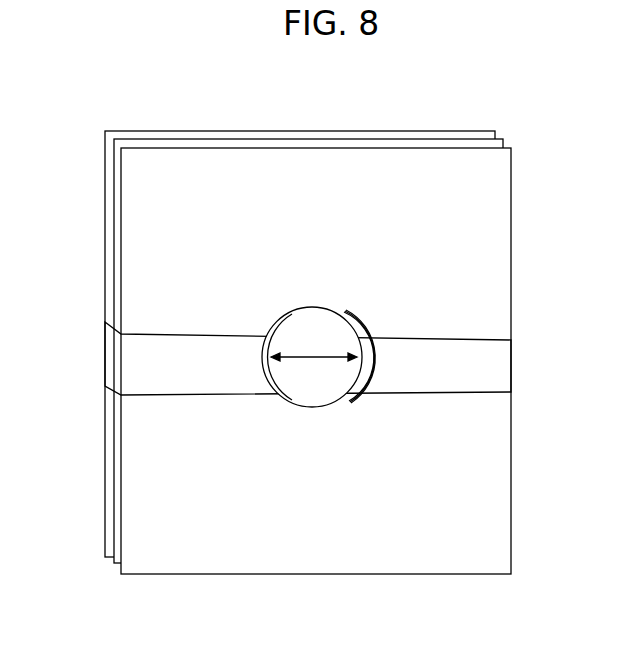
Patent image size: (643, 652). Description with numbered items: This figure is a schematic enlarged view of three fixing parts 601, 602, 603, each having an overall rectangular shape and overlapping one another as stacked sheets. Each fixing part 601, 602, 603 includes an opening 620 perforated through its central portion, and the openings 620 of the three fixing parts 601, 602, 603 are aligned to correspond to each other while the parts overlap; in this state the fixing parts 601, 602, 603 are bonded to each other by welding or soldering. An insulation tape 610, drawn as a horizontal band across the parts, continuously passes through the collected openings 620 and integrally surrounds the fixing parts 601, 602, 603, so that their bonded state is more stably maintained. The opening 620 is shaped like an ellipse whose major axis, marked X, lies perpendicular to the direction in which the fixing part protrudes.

The fixing part 601 is at (146, 572).
The fixing part 602 is at (113, 562).
The fixing part 603 is at (104, 548).
The insulation tape 610 is at (483, 365).
The opening 620 is at (293, 348).